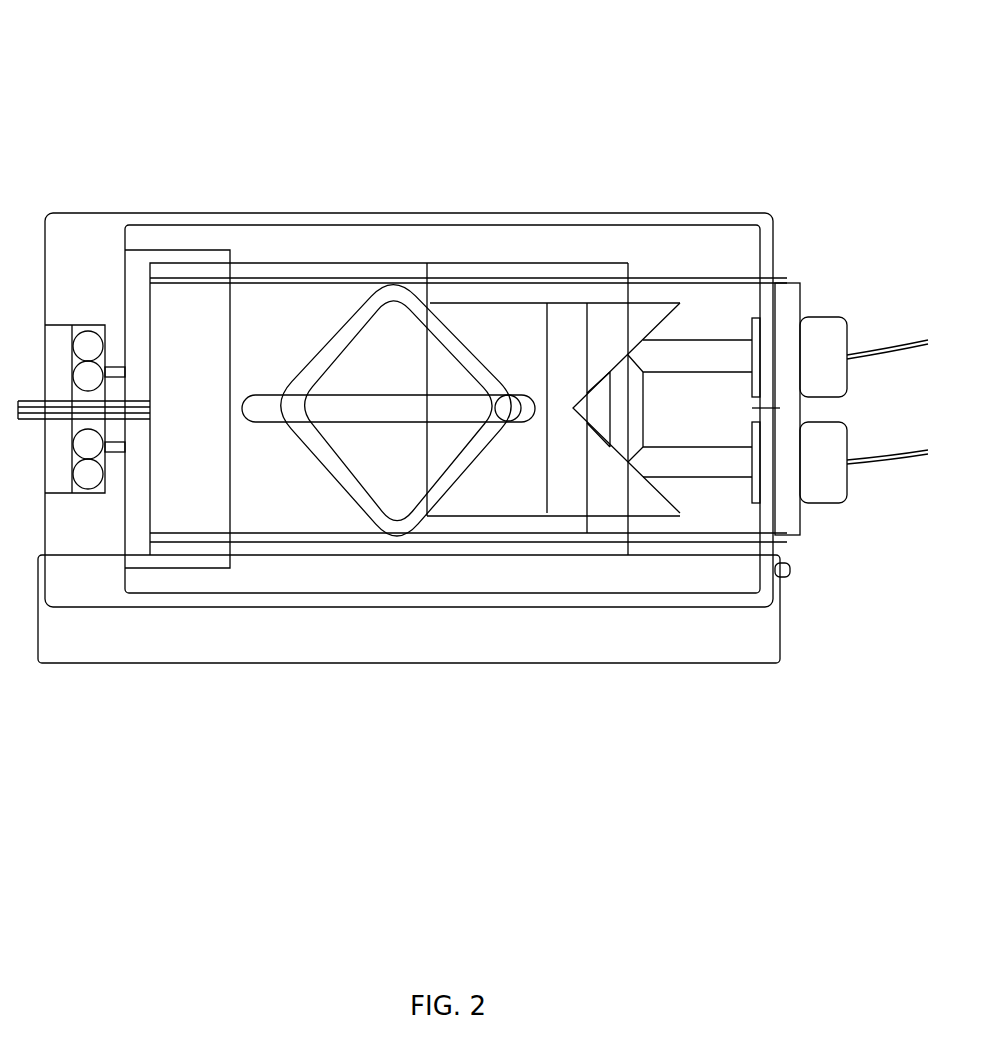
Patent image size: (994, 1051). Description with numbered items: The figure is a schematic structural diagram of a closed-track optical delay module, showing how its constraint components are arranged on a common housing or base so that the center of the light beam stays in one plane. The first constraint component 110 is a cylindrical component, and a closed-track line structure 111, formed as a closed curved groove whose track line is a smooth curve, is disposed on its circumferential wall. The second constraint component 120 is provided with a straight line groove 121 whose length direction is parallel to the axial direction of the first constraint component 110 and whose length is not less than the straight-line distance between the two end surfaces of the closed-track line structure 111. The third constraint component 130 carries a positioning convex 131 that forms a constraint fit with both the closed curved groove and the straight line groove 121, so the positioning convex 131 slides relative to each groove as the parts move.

The first constraint component 110 is at (330, 258).
The closed-track line structure 111 is at (462, 318).
The third constraint component 130 is at (540, 290).
The straight line groove 121 is at (333, 415).
The positioning convex 131 is at (508, 412).
The second constraint component 120 is at (712, 540).